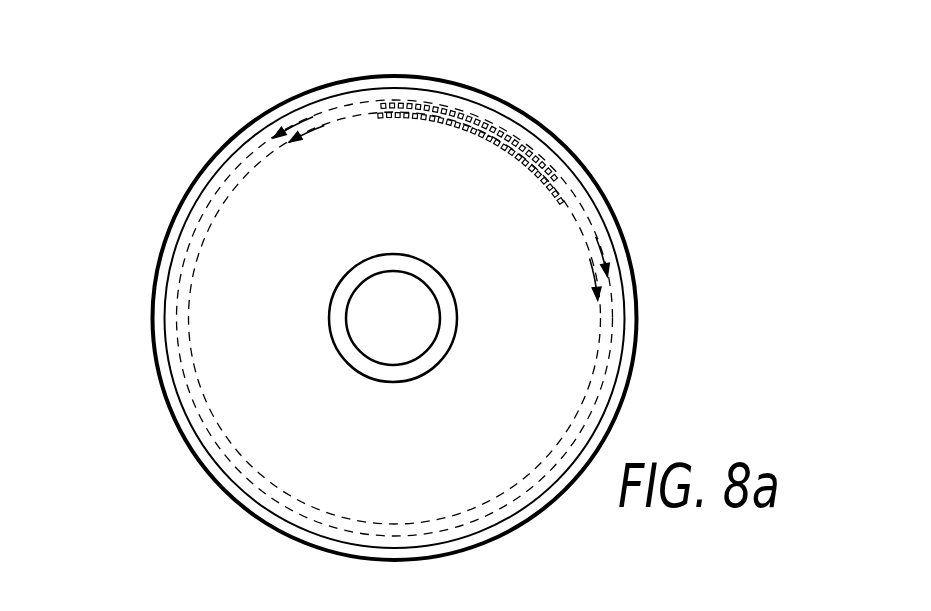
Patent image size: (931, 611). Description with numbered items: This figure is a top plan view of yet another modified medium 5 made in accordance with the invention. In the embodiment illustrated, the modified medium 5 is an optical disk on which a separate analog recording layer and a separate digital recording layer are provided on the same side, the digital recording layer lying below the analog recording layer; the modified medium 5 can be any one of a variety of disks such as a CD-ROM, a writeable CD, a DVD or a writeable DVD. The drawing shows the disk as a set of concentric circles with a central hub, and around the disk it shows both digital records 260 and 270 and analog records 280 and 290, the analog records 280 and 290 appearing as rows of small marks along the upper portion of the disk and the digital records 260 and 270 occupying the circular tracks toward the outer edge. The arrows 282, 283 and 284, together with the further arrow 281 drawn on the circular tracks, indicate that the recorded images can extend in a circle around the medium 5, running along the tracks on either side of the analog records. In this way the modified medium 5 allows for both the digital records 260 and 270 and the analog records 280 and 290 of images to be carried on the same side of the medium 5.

The modified medium 5 is at (153, 308).
The digital record 260 is at (593, 223).
The digital record 270 is at (599, 348).
The analog record 280 is at (507, 123).
The direction arrow on outer track 281 is at (313, 117).
The arrow 282 is at (577, 230).
The arrow 283 is at (324, 125).
The arrow 284 is at (592, 254).
The analog record 290 is at (500, 140).